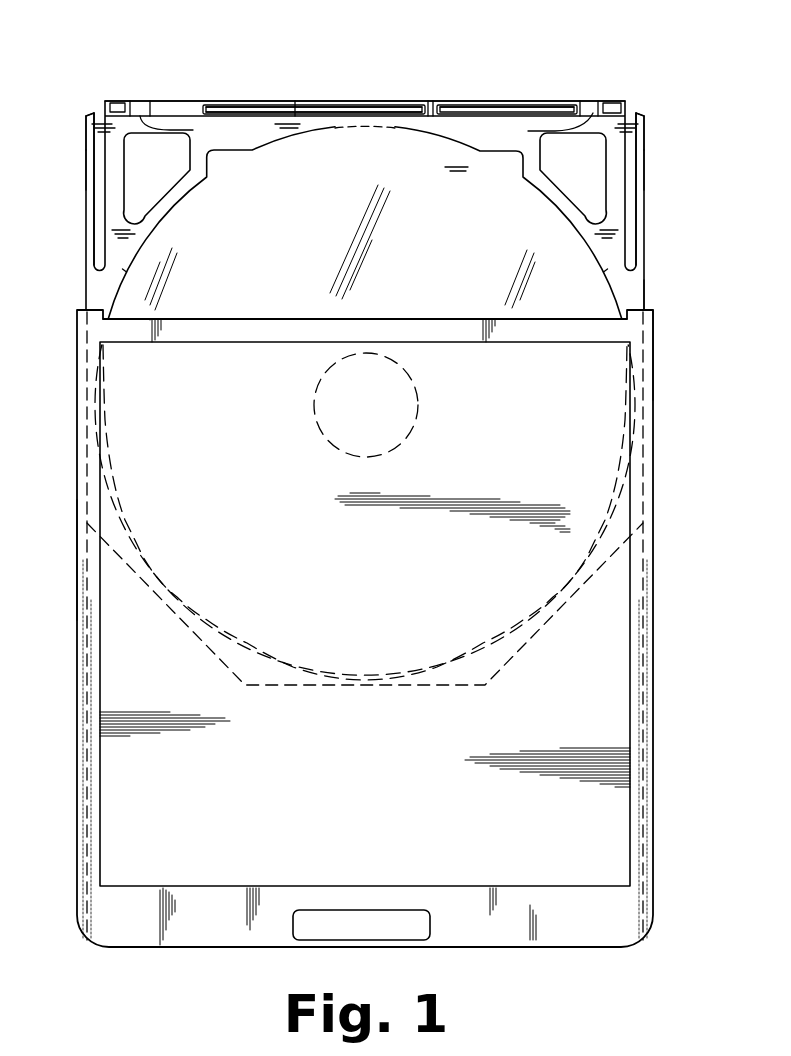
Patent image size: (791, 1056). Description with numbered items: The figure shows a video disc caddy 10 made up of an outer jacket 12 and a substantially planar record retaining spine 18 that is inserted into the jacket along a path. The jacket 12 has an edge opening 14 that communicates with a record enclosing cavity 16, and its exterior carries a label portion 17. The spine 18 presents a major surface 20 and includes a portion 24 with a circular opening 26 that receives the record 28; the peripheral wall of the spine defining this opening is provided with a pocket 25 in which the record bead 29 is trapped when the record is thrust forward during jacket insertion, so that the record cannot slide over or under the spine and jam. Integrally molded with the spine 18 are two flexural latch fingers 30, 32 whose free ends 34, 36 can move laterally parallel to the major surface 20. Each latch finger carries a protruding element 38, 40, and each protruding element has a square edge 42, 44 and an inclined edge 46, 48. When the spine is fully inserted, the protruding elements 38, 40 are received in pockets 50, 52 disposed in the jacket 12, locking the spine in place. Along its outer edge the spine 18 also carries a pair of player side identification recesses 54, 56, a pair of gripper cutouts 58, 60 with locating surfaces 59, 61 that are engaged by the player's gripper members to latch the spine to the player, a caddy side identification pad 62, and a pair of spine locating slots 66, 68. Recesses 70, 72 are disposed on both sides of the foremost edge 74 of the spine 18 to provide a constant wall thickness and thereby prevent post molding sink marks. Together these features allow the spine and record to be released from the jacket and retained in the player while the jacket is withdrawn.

The video disc caddy 10 is at (23, 319).
The jacket 12 is at (72, 668).
The edge opening 14 is at (212, 324).
The record enclosing cavity 16 is at (108, 703).
The label portion 17 is at (618, 812).
The record retaining spine 18 is at (145, 58).
The major surface 20 is at (120, 238).
The portion having circular opening 24 is at (640, 286).
The pocket 25 is at (372, 131).
The circular opening 26 is at (603, 271).
The record 28 is at (289, 310).
The record bead 29 is at (478, 160).
The flexural latch finger 30 is at (86, 205).
The flexural latch finger 32 is at (642, 207).
The free end 34 is at (90, 112).
The free end 36 is at (640, 113).
The protruding element 38 is at (88, 145).
The protruding element 40 is at (645, 142).
The square edge 42 is at (82, 137).
The square edge 44 is at (643, 140).
The inclined edge 46 is at (80, 148).
The inclined edge 48 is at (645, 147).
The pocket 50 is at (84, 354).
The pocket 52 is at (656, 357).
The player side identification recess 54 is at (118, 99).
The player side identification recess 56 is at (613, 103).
The gripper cutout 58 is at (138, 107).
The locating surface 59 is at (182, 130).
The gripper cutout 60 is at (592, 107).
The locating surface 61 is at (547, 129).
The caddy side identification pad 62 is at (195, 99).
The spine locating slot 66 is at (295, 112).
The spine locating slot 68 is at (430, 100).
The recess 70 is at (488, 107).
The recess 72 is at (270, 100).
The foremost edge 74 is at (322, 99).